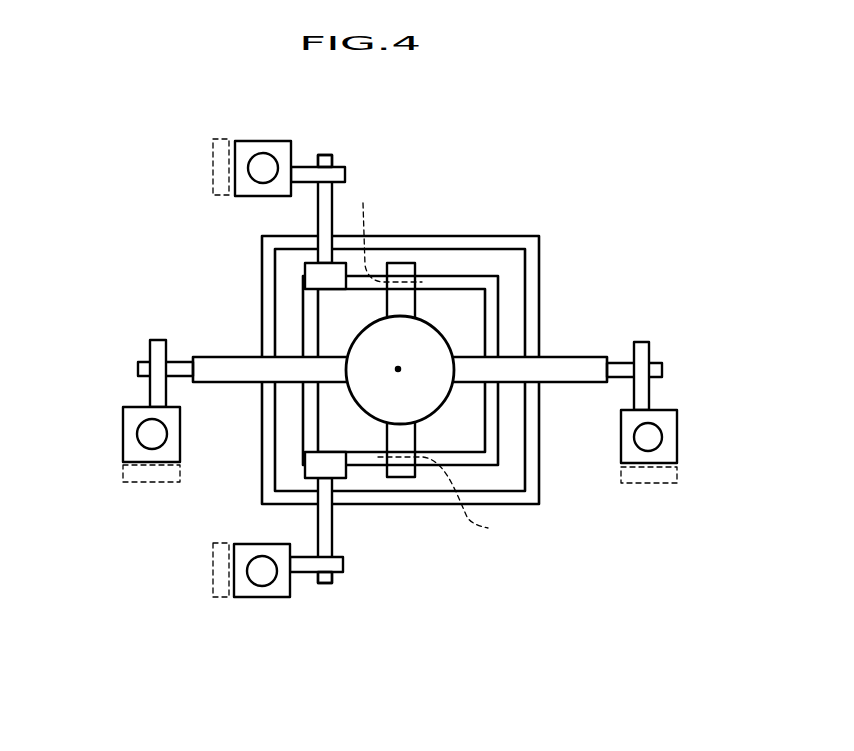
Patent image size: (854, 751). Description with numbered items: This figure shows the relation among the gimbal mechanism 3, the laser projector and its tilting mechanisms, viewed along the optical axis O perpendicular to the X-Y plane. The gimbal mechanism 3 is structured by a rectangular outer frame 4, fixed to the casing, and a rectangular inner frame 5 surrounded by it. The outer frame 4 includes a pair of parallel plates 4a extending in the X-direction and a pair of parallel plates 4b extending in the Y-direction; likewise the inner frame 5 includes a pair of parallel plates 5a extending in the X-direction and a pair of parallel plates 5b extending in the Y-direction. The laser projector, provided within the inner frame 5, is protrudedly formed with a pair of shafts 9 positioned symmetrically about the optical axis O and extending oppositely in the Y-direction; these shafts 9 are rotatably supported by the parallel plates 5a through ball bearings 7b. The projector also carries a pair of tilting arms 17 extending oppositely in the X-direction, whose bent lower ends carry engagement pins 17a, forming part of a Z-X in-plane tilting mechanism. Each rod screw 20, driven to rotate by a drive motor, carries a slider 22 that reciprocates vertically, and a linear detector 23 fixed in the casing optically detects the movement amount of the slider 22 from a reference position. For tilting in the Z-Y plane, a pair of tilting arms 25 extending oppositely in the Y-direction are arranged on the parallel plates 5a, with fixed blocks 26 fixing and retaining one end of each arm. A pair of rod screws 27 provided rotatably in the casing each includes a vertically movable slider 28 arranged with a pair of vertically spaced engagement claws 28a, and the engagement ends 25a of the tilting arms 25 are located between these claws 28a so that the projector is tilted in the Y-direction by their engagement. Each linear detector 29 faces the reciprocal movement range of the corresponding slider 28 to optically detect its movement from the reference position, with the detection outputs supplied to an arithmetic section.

The gimbal mechanism 3 is at (388, 356).
The outer frame 4 is at (388, 375).
The parallel plates 4a is at (455, 245).
The parallel plates 4b is at (533, 272).
The inner frame 5 is at (402, 377).
The parallel plates 5a is at (490, 428).
The parallel plates 5b is at (468, 283).
The ball bearings 7b is at (431, 363).
The shafts 9 is at (400, 270).
The tilting arms 17 is at (580, 362).
The engagement pins 17a is at (138, 368).
The rod screw 20 is at (152, 447).
The slider 22 is at (128, 432).
The linear detector 23 is at (123, 480).
The tilting arms 25 is at (323, 215).
The engagement ends 25a is at (325, 157).
The fixed blocks 26 is at (267, 260).
The rod screws 27 is at (263, 157).
The slider 28 is at (280, 148).
The engagement claws 28a is at (307, 173).
The linear detector 29 is at (213, 165).
The optical axis O is at (398, 369).